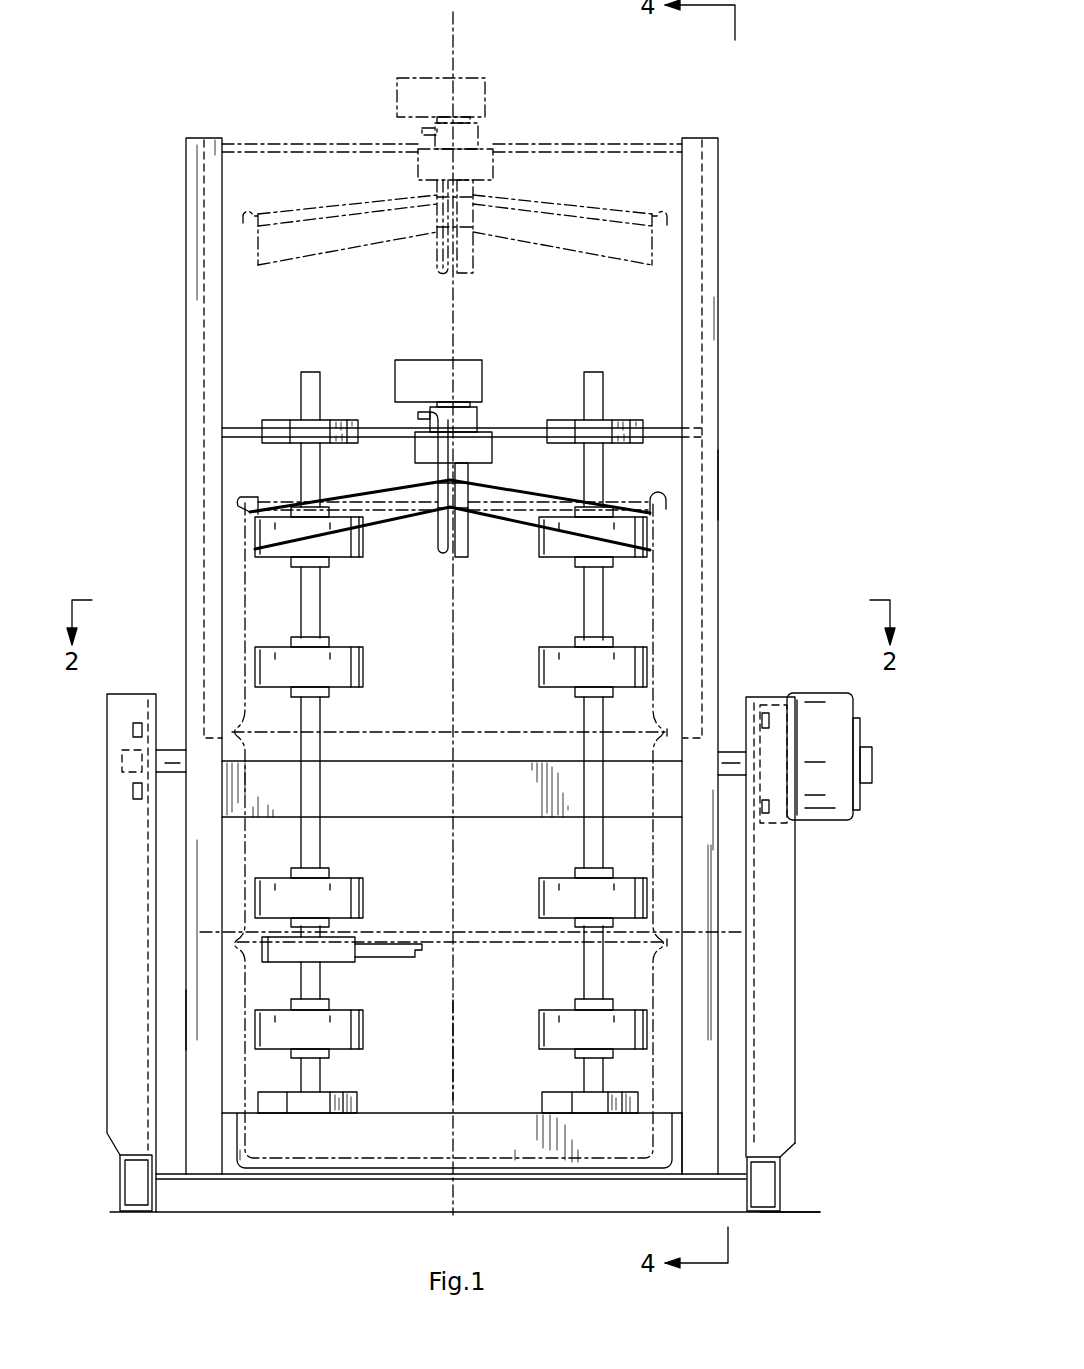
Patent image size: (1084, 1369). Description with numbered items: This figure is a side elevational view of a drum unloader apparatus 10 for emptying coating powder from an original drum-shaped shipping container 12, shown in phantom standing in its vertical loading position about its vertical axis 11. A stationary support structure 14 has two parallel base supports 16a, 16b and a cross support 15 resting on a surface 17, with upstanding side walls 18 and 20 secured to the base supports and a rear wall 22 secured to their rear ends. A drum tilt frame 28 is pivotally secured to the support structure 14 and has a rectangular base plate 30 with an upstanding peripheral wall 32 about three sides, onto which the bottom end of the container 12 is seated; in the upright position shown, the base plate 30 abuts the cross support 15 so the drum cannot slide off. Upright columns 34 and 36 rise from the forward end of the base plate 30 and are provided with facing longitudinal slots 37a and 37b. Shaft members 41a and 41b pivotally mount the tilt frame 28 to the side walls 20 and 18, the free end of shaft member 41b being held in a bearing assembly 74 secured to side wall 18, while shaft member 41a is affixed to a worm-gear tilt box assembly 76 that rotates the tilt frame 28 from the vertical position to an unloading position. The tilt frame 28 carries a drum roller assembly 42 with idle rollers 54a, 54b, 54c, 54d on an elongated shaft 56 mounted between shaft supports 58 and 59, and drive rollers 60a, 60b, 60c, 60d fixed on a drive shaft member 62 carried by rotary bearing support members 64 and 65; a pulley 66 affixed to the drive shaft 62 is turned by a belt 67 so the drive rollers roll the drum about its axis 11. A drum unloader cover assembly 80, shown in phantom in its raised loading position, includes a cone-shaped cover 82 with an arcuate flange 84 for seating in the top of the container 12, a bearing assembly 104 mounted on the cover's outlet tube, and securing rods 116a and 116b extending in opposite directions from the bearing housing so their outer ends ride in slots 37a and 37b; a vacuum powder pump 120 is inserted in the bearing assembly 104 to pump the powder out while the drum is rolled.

The drum unloader apparatus 10 is at (733, 242).
The vertical axis 11 is at (448, 1048).
The drum-shaped shipping container 12 is at (655, 590).
The stationary support structure 14 is at (473, 783).
The cross support 15 is at (370, 1195).
The base support 16a is at (782, 1176).
The base support 16b is at (118, 1165).
The surface 17 is at (810, 1213).
The side wall 18 is at (120, 957).
The side wall 20 is at (788, 957).
The rear wall 22 is at (168, 1022).
The drum tilt frame 28 is at (733, 485).
The rectangular base plate 30 is at (592, 1178).
The upstanding peripheral wall 32 is at (680, 1145).
The upright column 34 is at (197, 648).
The upright column 36 is at (710, 633).
The longitudinal slot 37a is at (210, 297).
The longitudinal slot 37b is at (695, 310).
The shaft member 41a is at (732, 757).
The shaft member 41b is at (175, 772).
The drum roller assembly 42 is at (645, 480).
The idle roller 54a is at (563, 548).
The idle roller 54b is at (560, 660).
The idle roller 54c is at (548, 912).
The idle roller 54d is at (540, 1032).
The elongated shaft 56 is at (590, 850).
The shaft support 58 is at (612, 420).
The shaft support 59 is at (553, 1105).
The drive roller 60a is at (363, 547).
The drive roller 60b is at (347, 677).
The drive roller 60c is at (347, 895).
The drive roller 60d is at (355, 1030).
The drive shaft member 62 is at (312, 843).
The rotary bearing support member 64 is at (328, 420).
The rotary bearing support member 65 is at (352, 1100).
The pulley 66 is at (343, 962).
The belt 67 is at (390, 948).
The bearing assembly 74 is at (123, 732).
The tilt box assembly 76 is at (867, 723).
The drum unloader cover assembly 80 is at (528, 193).
The cone-shaped cover 82 is at (375, 488).
The arcuate flange 84 is at (652, 497).
The bearing assembly 104 is at (497, 452).
The securing rod 116a is at (240, 428).
The securing rod 116b is at (675, 428).
The vacuum powder pump 120 is at (465, 372).